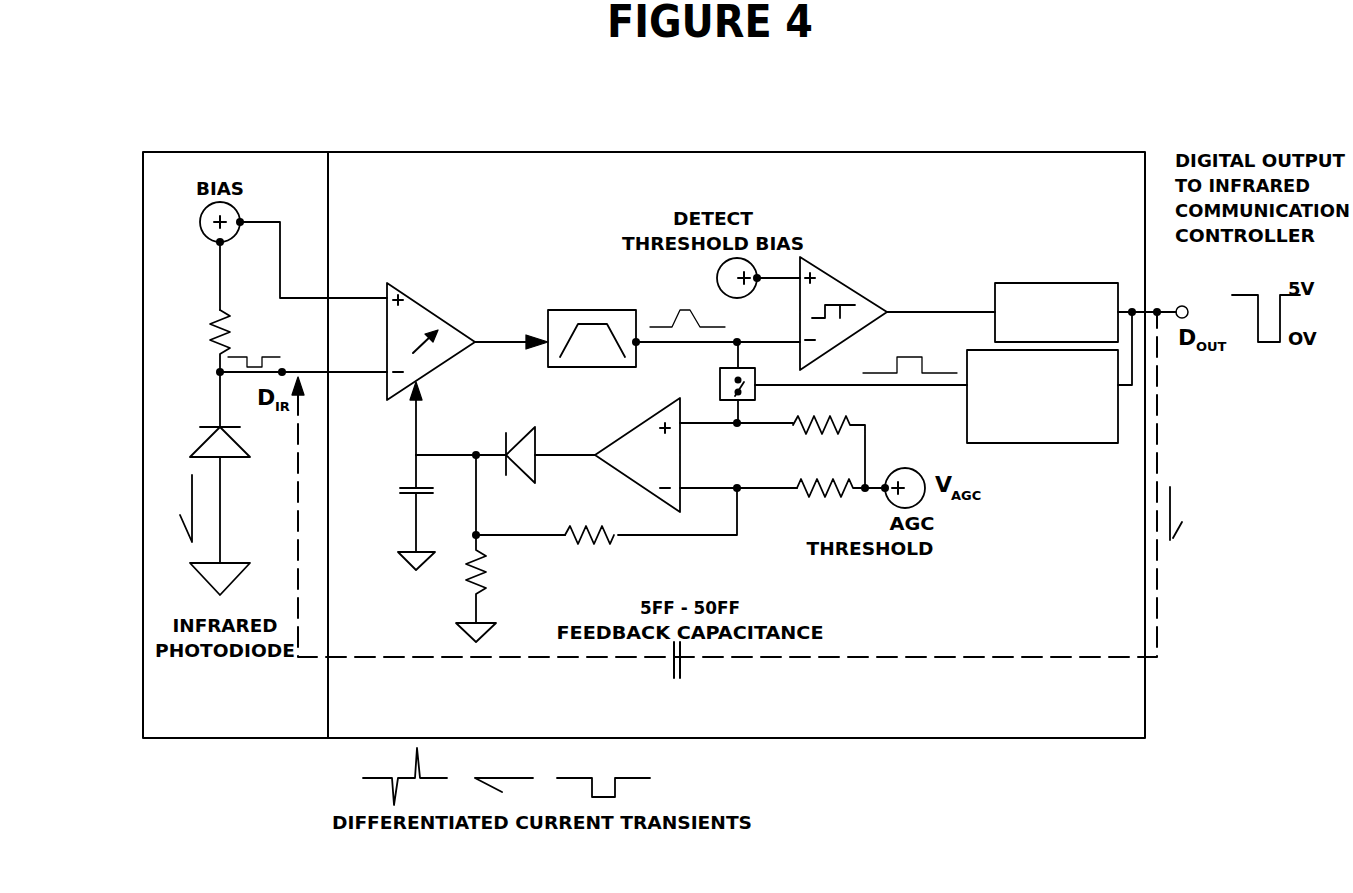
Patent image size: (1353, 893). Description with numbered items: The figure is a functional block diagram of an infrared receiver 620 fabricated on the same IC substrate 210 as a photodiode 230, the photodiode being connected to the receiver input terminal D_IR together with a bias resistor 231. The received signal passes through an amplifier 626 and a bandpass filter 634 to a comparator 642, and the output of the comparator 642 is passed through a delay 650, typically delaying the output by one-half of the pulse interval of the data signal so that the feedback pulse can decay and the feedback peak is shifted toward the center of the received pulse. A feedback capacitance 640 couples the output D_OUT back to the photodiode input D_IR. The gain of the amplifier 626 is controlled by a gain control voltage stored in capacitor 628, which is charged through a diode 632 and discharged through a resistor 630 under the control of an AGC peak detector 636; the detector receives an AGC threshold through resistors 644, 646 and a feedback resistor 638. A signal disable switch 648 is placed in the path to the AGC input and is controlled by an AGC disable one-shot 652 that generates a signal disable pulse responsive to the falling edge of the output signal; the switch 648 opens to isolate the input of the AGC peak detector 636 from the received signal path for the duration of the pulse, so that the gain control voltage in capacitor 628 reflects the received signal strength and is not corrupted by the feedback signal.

The IC substrate 210 is at (205, 152).
The photodiode 230 is at (241, 458).
The bias resistor 231 is at (236, 312).
The infrared receiver 620 is at (505, 218).
The variable gain amplifier 626 is at (415, 297).
The capacitor 628 is at (412, 488).
The resistor 630 is at (486, 572).
The diode 632 is at (536, 440).
The bandpass filter 634 is at (615, 309).
The AGC peak detector 636 is at (645, 420).
The feedback resistor 638 is at (580, 543).
The feedback capacitance 640 is at (683, 672).
The comparator 642 is at (808, 253).
The AGC threshold resistor 644 is at (812, 497).
The resistor 646 is at (845, 423).
The signal disable switch 648 is at (720, 391).
The delay 650 is at (1030, 283).
The AGC disable one-shot 652 is at (1035, 445).